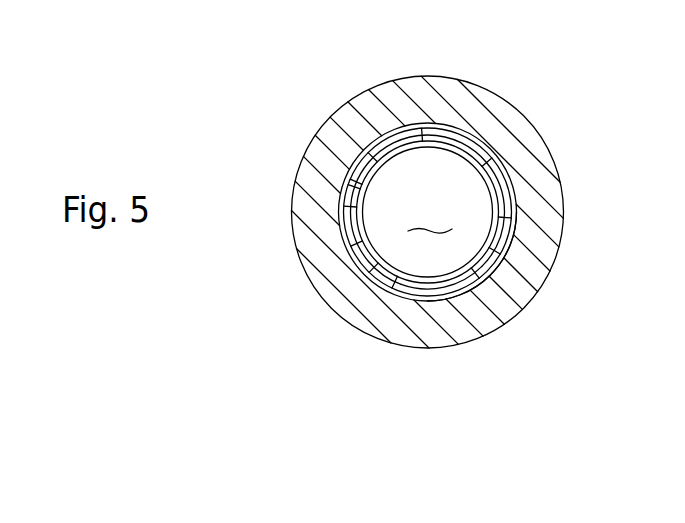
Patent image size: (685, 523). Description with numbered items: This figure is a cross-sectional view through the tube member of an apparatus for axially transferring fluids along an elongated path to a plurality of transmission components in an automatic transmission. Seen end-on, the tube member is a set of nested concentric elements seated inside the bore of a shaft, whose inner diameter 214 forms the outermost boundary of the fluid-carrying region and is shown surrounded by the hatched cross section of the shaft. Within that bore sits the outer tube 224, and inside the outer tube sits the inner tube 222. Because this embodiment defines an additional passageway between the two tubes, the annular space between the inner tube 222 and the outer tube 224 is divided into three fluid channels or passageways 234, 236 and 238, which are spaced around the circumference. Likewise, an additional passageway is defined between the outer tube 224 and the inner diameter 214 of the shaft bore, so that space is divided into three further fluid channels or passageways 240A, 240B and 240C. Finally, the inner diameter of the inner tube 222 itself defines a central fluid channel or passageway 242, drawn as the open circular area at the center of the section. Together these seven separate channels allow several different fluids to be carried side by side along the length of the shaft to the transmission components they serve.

The inner diameter 214 is at (517, 315).
The inner tube 222 is at (380, 125).
The outer tube 224 is at (395, 288).
The fluid channel 234 is at (438, 136).
The fluid channel 236 is at (498, 250).
The fluid channel 238 is at (355, 244).
The fluid channel 240A is at (352, 180).
The fluid channel 240B is at (500, 168).
The fluid channel 240C is at (430, 295).
The fluid channel 242 is at (428, 212).